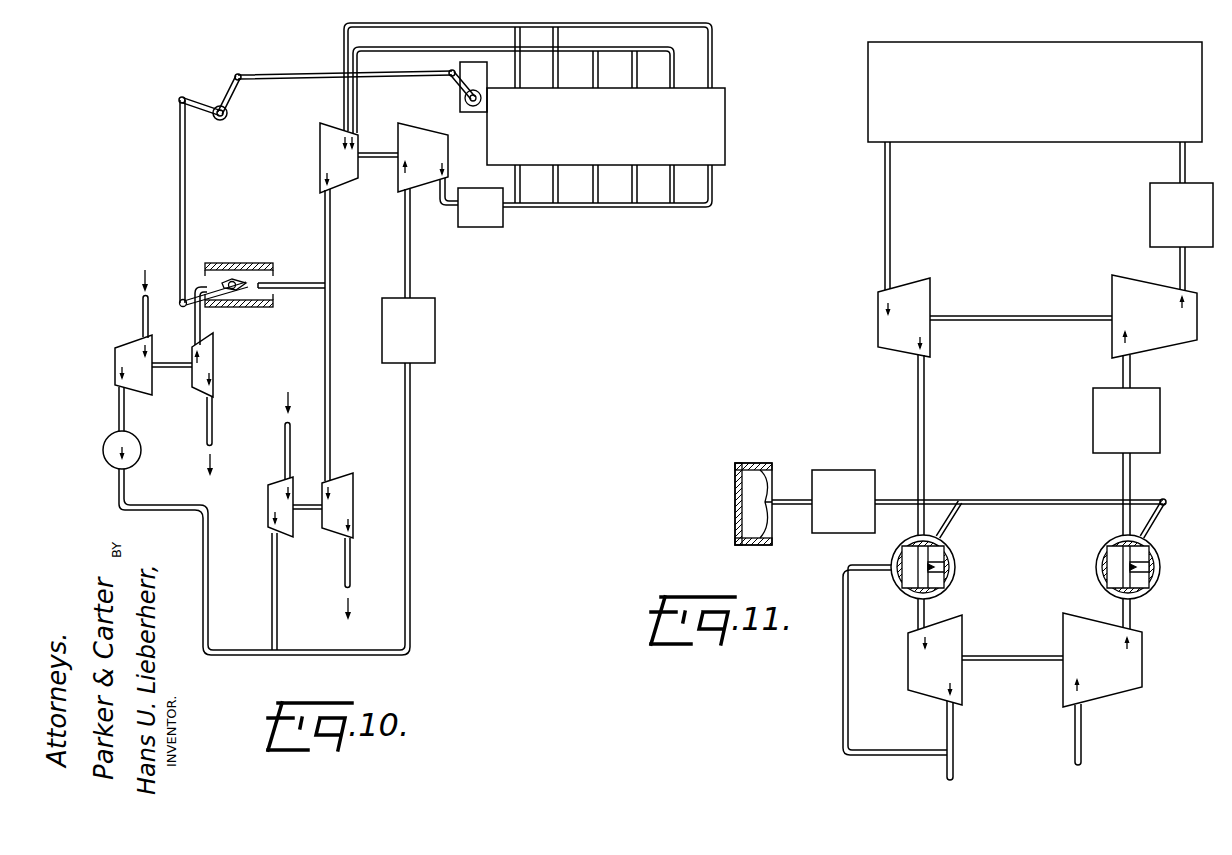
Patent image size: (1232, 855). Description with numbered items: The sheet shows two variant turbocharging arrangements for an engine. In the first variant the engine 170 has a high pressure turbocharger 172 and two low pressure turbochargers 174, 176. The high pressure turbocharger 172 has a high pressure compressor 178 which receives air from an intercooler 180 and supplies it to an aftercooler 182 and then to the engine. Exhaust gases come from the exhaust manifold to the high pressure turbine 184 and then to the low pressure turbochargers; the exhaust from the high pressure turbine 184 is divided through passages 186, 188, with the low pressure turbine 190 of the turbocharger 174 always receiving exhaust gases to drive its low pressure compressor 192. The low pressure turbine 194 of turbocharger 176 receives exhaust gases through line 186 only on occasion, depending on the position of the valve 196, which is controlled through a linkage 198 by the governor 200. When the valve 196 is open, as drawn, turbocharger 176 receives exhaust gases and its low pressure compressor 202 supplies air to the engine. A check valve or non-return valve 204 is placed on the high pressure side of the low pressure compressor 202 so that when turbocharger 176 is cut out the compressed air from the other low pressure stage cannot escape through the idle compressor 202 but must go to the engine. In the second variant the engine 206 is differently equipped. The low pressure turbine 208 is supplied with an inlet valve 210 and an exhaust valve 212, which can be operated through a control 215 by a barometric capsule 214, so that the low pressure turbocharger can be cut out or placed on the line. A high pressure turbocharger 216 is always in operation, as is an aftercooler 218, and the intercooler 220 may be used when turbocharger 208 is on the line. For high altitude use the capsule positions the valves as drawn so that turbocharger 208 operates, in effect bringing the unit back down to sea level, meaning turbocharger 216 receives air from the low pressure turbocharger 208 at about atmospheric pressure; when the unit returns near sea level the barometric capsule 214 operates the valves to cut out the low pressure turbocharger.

In FIG. 10, the engine 170 is at (712, 132).
In FIG. 10, the high pressure turbocharger 172 is at (375, 172).
In FIG. 10, the low pressure turbocharger 174 is at (305, 521).
In FIG. 10, the low pressure turbocharger 176 is at (173, 384).
In FIG. 10, the high pressure compressor 178 is at (410, 123).
In FIG. 10, the intercooler 180 is at (425, 335).
In FIG. 10, the aftercooler 182 is at (480, 218).
In FIG. 10, the high pressure turbine 184 is at (320, 160).
In FIG. 10, the passage 186 is at (303, 290).
In FIG. 10, the passage 188 is at (332, 435).
In FIG. 10, the low pressure turbine 190 is at (353, 497).
In FIG. 10, the low pressure compressor 192 is at (257, 523).
In FIG. 10, the low pressure turbine 194 is at (213, 365).
In FIG. 10, the valve 196 is at (242, 282).
In FIG. 10, the linkage 198 is at (296, 46).
In FIG. 10, the governor 200 is at (446, 87).
In FIG. 10, the low pressure compressor 202 is at (98, 363).
In FIG. 10, the check valve 204 is at (92, 460).
In FIG. 11, the engine 206 is at (1033, 132).
In FIG. 11, the low pressure turbine 208 is at (988, 710).
In FIG. 11, the inlet valve 210 is at (1157, 552).
In FIG. 11, the exhaust valve 212 is at (953, 553).
In FIG. 11, the barometric capsule 214 is at (757, 463).
In FIG. 11, the control 215 is at (838, 470).
In FIG. 11, the high pressure turbocharger 216 is at (1045, 338).
In FIG. 11, the aftercooler 218 is at (1150, 215).
In FIG. 11, the intercooler 220 is at (1155, 422).